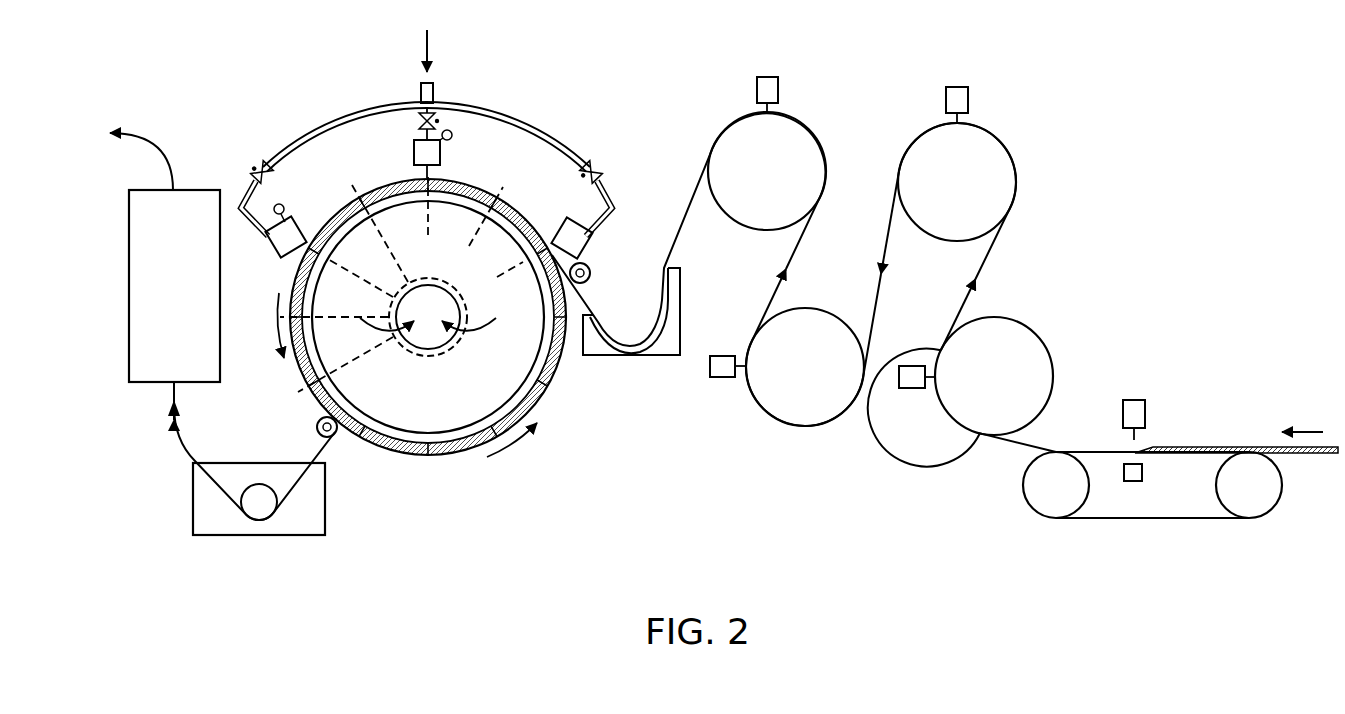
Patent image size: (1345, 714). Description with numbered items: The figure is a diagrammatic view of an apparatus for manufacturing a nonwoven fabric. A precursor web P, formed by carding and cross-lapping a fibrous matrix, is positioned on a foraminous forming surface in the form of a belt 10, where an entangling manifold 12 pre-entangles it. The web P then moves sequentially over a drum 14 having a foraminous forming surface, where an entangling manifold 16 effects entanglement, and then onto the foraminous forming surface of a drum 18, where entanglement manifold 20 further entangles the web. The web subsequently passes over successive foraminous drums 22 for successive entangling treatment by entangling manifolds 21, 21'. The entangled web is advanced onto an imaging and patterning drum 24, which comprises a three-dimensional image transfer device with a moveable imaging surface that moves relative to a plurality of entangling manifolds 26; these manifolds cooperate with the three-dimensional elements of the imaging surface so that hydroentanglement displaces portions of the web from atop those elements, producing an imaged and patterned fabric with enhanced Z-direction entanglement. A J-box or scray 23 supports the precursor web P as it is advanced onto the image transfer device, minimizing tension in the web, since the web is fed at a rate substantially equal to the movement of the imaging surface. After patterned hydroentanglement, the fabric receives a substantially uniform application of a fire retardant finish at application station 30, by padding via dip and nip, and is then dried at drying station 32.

The belt 10 is at (1147, 519).
The entangling manifold 12 is at (1136, 400).
The drum 14 is at (1037, 333).
The entangling manifold 16 is at (918, 389).
The drum 18 is at (942, 243).
The entanglement manifold 20 is at (969, 100).
The entangling manifold 21 is at (725, 399).
The entangling manifold 21' is at (801, 90).
The rollers 22 is at (743, 229).
The J-box or scray 23 is at (632, 357).
The imaging and patterning drum 24 is at (422, 440).
The entangling manifolds 26 is at (302, 218).
The application station 30 is at (326, 499).
The drying station 32 is at (129, 289).
The precursor web P is at (1210, 447).